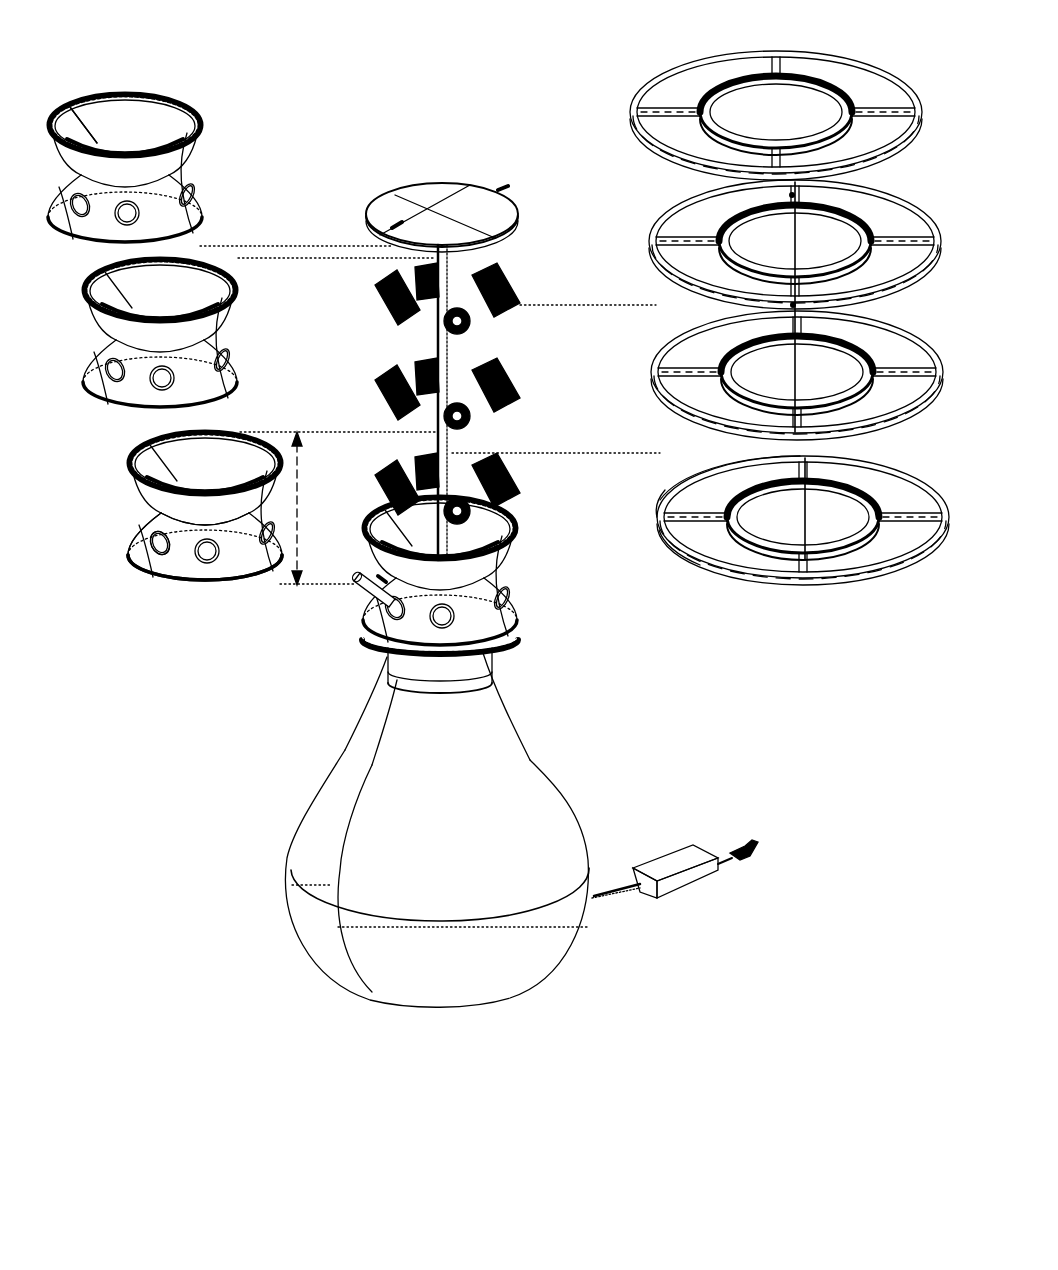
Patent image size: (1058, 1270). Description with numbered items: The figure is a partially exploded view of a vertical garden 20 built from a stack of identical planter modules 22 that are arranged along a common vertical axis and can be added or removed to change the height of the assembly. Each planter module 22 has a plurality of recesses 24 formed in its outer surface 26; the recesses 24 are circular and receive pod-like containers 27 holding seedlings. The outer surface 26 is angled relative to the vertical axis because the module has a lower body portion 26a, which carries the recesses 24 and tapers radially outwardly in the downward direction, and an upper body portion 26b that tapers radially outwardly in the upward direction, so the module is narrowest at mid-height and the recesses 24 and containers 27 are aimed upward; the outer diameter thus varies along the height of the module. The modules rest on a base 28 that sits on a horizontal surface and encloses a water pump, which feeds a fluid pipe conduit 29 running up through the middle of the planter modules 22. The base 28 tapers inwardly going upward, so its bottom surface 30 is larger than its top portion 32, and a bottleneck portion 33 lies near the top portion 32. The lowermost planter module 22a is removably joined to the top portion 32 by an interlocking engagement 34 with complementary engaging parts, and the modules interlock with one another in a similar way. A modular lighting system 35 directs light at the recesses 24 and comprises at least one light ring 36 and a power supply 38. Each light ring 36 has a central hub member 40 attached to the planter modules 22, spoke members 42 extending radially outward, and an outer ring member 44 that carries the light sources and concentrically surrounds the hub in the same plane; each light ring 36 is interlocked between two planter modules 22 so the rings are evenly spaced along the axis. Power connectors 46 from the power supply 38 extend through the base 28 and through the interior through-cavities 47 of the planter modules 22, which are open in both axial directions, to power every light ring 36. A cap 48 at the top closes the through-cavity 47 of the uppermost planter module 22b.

The vertical garden 20 is at (510, 138).
The planter module 22 is at (127, 470).
The lowermost planter module 22a is at (370, 607).
The uppermost planter module 22b is at (152, 162).
The recess 24 is at (143, 555).
The outer surface 26 is at (148, 527).
The lower body portion 26a is at (195, 585).
The upper body portion 26b is at (160, 500).
The container 27 is at (385, 312).
The base 28 is at (323, 827).
The fluid pipe conduit 29 is at (437, 342).
The bottom surface 30 is at (355, 990).
The top portion 32 is at (383, 653).
The bottleneck portion 33 is at (397, 680).
The interlocking engagement 34 is at (382, 637).
The modular lighting system 35 is at (897, 65).
The light ring 36 is at (670, 498).
The power supply 38 is at (668, 868).
The central hub member 40 is at (742, 560).
The spoke member 42 is at (668, 515).
The outer ring member 44 is at (672, 540).
The power connector 46 is at (597, 897).
The through-cavity 47 is at (135, 132).
The cap 48 is at (387, 203).